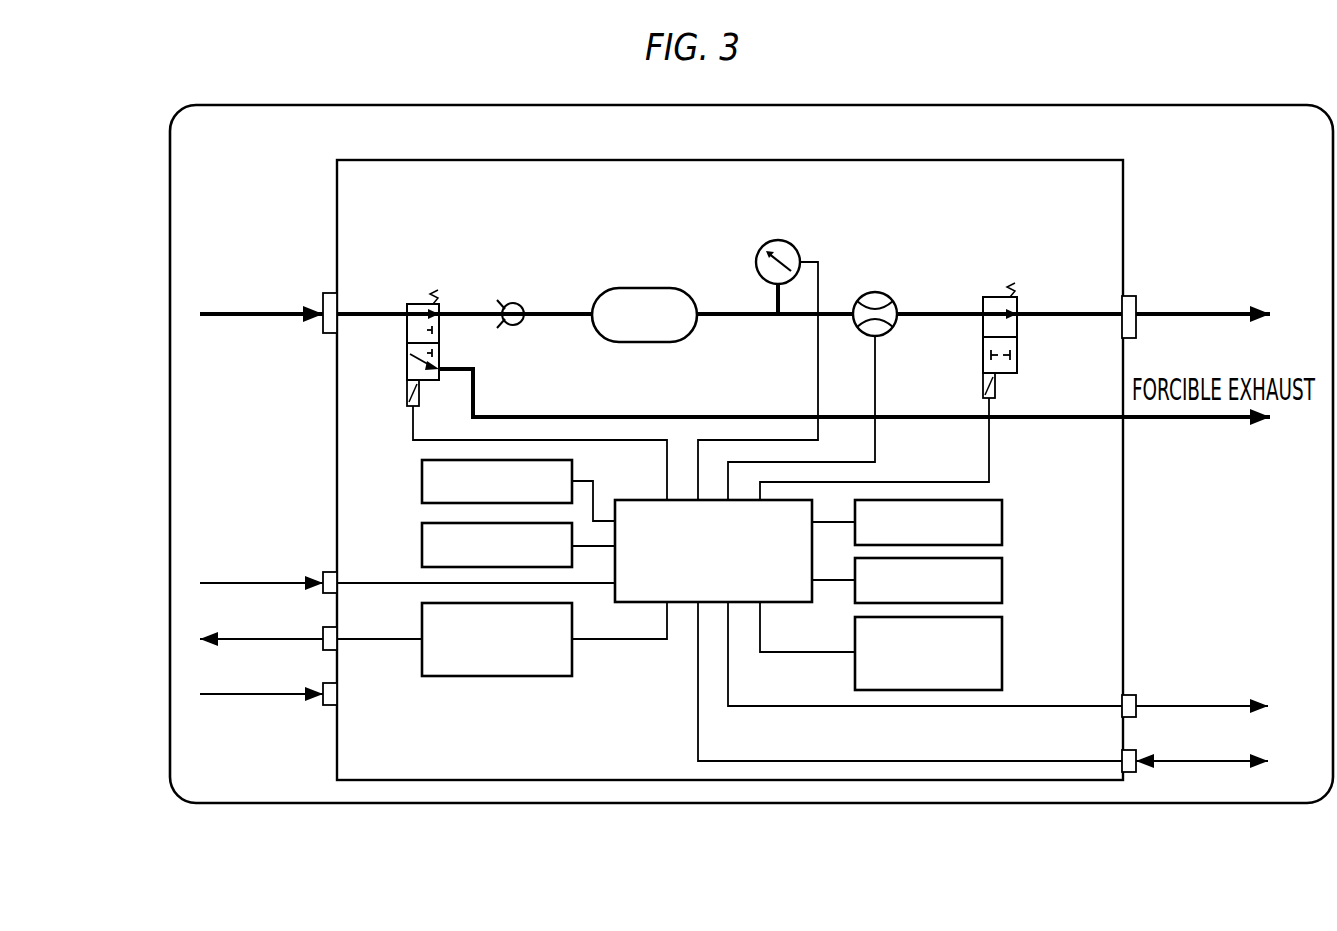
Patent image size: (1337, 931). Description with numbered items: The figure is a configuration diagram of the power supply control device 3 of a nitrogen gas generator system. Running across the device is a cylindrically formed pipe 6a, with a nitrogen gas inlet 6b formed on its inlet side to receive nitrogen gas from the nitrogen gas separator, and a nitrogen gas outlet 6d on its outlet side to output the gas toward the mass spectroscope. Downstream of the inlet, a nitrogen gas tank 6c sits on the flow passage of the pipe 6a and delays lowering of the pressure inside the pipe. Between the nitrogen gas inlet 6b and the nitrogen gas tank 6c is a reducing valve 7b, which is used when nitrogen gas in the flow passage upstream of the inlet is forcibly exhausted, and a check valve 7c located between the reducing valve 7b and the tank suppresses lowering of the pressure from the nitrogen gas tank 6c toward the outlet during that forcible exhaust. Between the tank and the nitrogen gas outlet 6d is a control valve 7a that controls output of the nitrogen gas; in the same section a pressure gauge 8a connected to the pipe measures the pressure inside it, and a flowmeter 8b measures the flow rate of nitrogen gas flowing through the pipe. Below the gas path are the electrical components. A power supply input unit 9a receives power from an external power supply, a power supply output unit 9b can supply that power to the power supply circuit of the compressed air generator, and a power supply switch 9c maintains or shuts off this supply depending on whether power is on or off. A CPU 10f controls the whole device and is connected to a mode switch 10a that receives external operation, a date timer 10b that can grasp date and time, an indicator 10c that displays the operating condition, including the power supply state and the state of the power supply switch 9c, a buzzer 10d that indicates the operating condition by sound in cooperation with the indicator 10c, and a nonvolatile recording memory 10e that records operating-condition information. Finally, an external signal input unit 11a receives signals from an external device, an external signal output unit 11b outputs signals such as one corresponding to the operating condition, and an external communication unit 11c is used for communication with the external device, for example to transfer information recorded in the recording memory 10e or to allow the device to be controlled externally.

The power supply control device 3 is at (170, 153).
The pipe 6a is at (476, 313).
The nitrogen gas inlet 6b is at (329, 293).
The nitrogen gas tank 6c is at (645, 342).
The nitrogen gas outlet 6d is at (1128, 296).
The control valve 7a is at (1017, 333).
The reducing valve 7b is at (407, 345).
The check valve 7c is at (520, 325).
The pressure gauge 8a is at (756, 262).
The flowmeter 8b is at (891, 332).
The power supply input unit 9a is at (327, 705).
The power supply output unit 9b is at (323, 648).
The power supply switch 9c is at (478, 676).
The mode switch 10a is at (422, 546).
The date timer 10b is at (422, 484).
The indicator 10c is at (1002, 522).
The buzzer 10d is at (1002, 580).
The recording memory 10e is at (1002, 652).
The CPU 10f is at (637, 500).
The external signal input unit 11a is at (326, 572).
The external signal output unit 11b is at (1128, 695).
The external communication unit 11c is at (1129, 778).